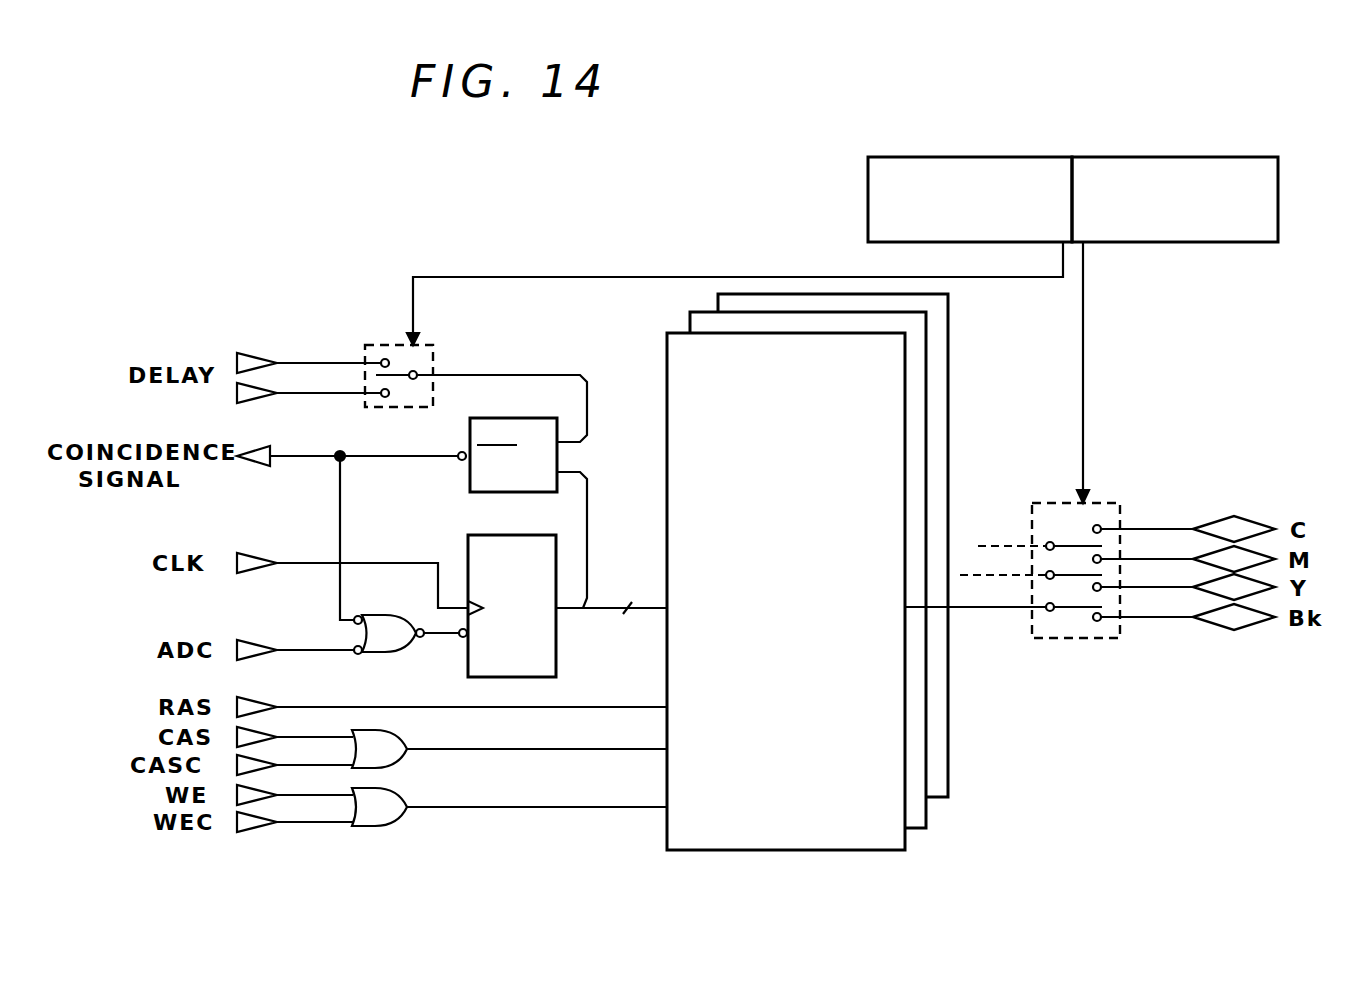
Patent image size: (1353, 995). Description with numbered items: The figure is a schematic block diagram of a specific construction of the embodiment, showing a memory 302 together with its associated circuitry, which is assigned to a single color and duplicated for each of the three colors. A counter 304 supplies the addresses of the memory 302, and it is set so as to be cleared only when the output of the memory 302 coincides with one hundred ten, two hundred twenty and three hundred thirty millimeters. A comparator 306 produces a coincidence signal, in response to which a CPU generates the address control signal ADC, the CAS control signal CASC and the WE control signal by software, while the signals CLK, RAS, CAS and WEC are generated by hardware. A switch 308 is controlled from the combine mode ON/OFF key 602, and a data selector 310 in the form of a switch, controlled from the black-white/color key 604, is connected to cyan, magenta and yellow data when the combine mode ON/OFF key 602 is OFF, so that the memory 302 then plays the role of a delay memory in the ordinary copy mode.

The memory 302 is at (905, 850).
The counter 304 is at (556, 652).
The comparator 306 is at (515, 418).
The switch 308 is at (437, 356).
The data selector 310 is at (1116, 503).
The combine mode ON/OFF key 602 is at (868, 200).
The black-white/color key 604 is at (1278, 222).